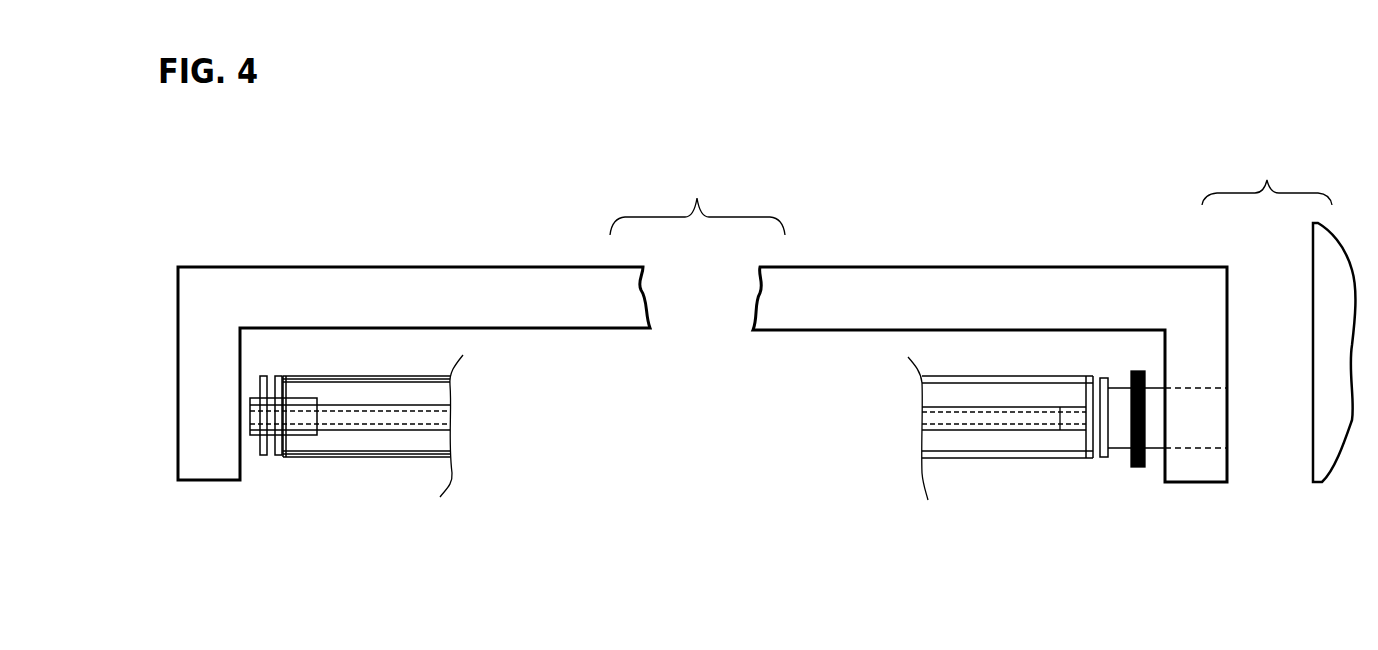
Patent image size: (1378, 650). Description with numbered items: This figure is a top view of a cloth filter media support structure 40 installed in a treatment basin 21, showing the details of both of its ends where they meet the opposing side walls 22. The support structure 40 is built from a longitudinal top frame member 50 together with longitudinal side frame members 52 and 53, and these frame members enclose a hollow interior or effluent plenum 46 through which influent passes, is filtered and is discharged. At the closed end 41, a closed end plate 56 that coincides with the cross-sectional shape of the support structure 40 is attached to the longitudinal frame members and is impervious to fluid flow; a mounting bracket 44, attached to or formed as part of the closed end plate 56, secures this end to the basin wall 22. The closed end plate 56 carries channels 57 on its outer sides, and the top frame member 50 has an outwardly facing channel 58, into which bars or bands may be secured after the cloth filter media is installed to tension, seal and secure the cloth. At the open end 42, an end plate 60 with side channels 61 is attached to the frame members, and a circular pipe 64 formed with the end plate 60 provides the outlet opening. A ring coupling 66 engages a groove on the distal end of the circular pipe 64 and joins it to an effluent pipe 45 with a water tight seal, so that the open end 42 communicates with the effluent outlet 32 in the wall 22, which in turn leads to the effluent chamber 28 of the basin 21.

The treatment basin 21 is at (555, 366).
The side wall 22 is at (198, 367).
The effluent chamber 28 is at (1273, 470).
The effluent outlet 32 is at (1213, 428).
The cloth filter media support structure 40 is at (1042, 502).
The closed end 41 is at (259, 465).
The open end 42 is at (1107, 491).
The mounting bracket 44 is at (250, 423).
The effluent pipe 45 is at (1153, 458).
The effluent plenum 46 is at (328, 440).
The longitudinal top frame member 50 is at (447, 419).
The longitudinal side frame member 52 is at (370, 460).
The longitudinal side frame member 53 is at (363, 375).
The closed end plate 56 is at (265, 377).
The channel 57 is at (268, 443).
The outwardly facing channel 58 is at (420, 417).
The end plate 60 is at (1113, 458).
The side channel 61 is at (1098, 460).
The circular pipe 64 is at (1116, 403).
The ring coupling 66 is at (1148, 375).